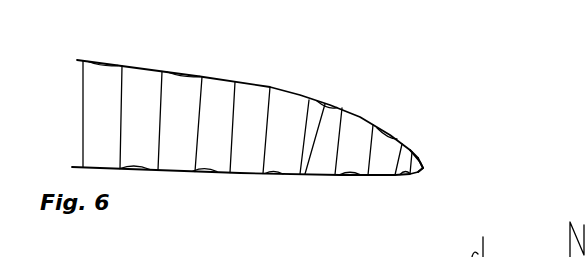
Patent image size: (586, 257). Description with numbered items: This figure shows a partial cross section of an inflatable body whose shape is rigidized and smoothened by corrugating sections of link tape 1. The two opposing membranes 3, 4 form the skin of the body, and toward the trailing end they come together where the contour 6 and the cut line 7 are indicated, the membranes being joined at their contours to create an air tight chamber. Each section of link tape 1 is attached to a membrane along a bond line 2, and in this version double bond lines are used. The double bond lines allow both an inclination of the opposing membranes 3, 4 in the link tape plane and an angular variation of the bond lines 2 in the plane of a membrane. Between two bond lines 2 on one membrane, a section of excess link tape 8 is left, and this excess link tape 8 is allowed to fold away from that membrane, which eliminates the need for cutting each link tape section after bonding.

The link tape 1 is at (265, 130).
The bond line 2 is at (160, 170).
The opposing membrane 3 is at (292, 92).
The opposing membrane 4 is at (307, 175).
The contour 6 is at (479, 152).
The cut line 7 is at (497, 145).
The excess link tape 8 is at (305, 173).